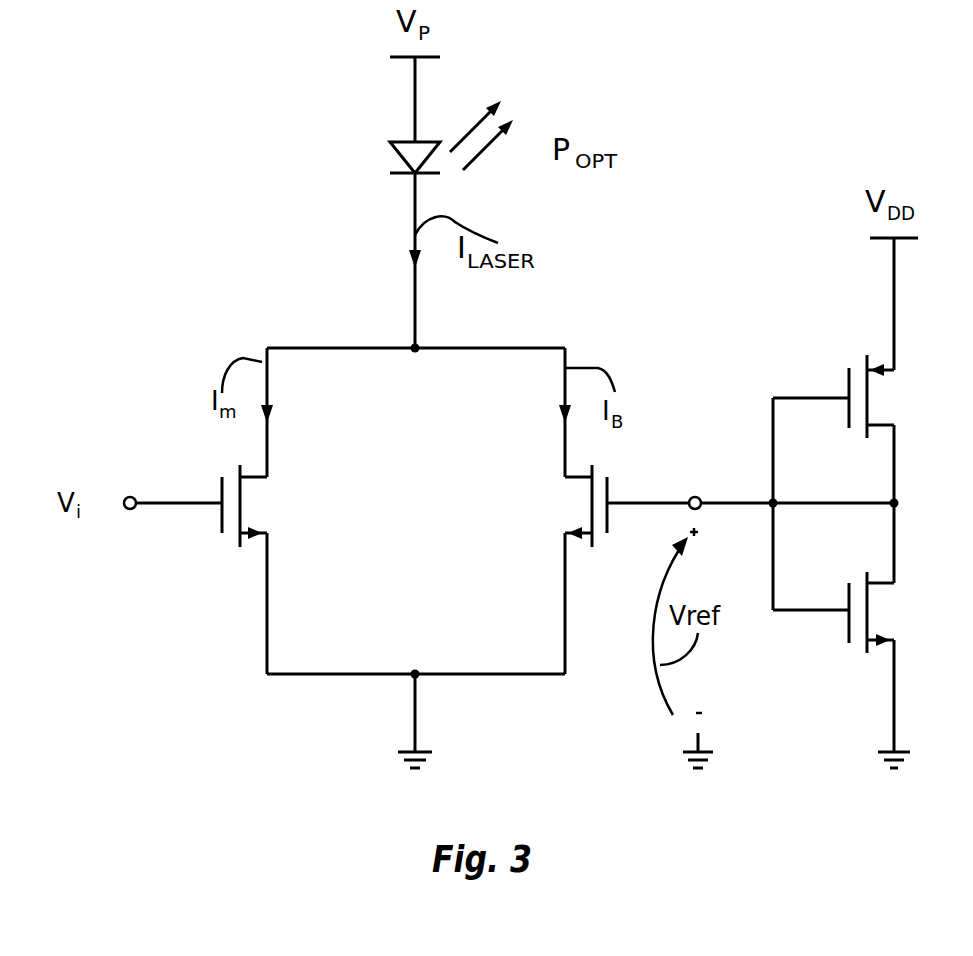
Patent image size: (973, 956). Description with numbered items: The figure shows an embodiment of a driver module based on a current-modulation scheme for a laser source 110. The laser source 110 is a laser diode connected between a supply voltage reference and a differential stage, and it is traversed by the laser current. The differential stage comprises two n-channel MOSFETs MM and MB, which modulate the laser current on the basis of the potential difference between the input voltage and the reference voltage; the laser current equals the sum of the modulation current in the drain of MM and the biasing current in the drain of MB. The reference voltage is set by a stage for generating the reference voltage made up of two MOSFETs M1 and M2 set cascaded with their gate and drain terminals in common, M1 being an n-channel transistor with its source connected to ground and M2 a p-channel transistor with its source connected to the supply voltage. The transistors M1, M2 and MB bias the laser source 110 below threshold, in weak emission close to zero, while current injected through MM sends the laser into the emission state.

The laser source 110 is at (415, 150).
The n-channel MOSFET M_M MM is at (244, 493).
The n-channel MOSFET M_B MB is at (590, 493).
The n-channel transistor M_1 M1 is at (868, 597).
The p-channel transistor M_2 M2 is at (868, 377).